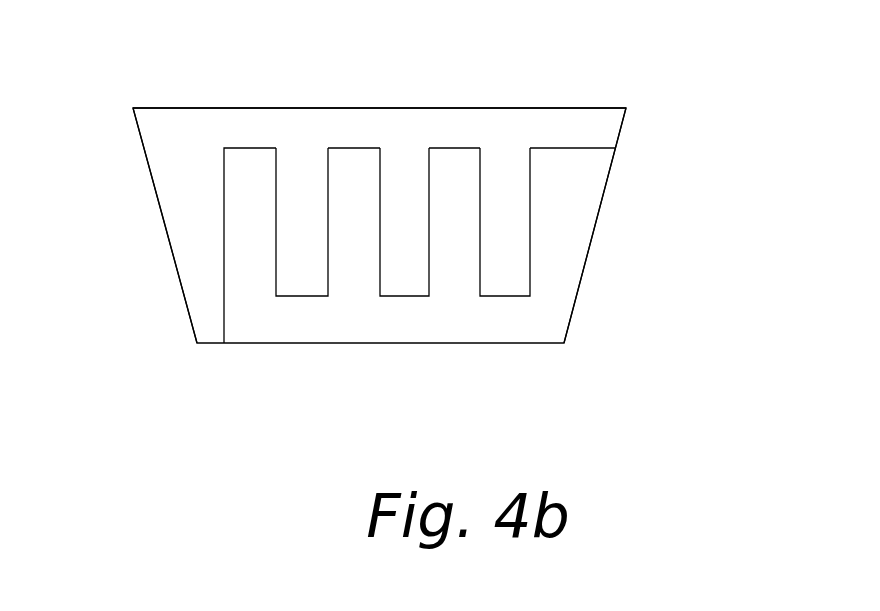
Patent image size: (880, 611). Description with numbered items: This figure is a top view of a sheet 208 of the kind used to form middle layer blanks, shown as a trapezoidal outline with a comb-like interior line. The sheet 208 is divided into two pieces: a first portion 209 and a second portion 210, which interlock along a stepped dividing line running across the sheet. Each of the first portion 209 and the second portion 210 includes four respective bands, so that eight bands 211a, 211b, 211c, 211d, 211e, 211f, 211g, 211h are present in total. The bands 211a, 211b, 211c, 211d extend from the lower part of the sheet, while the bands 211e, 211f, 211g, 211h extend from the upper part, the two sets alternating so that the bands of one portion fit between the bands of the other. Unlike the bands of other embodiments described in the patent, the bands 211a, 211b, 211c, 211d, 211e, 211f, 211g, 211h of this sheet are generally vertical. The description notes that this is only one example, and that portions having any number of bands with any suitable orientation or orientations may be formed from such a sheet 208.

The sheet 208 is at (655, 105).
The first portion 209 is at (150, 144).
The second portion 210 is at (572, 305).
The band 211a is at (190, 290).
The band 211b is at (302, 283).
The band 211c is at (407, 283).
The band 211d is at (508, 283).
The band 211e is at (248, 157).
The band 211f is at (352, 157).
The band 211g is at (453, 157).
The band 211h is at (567, 157).